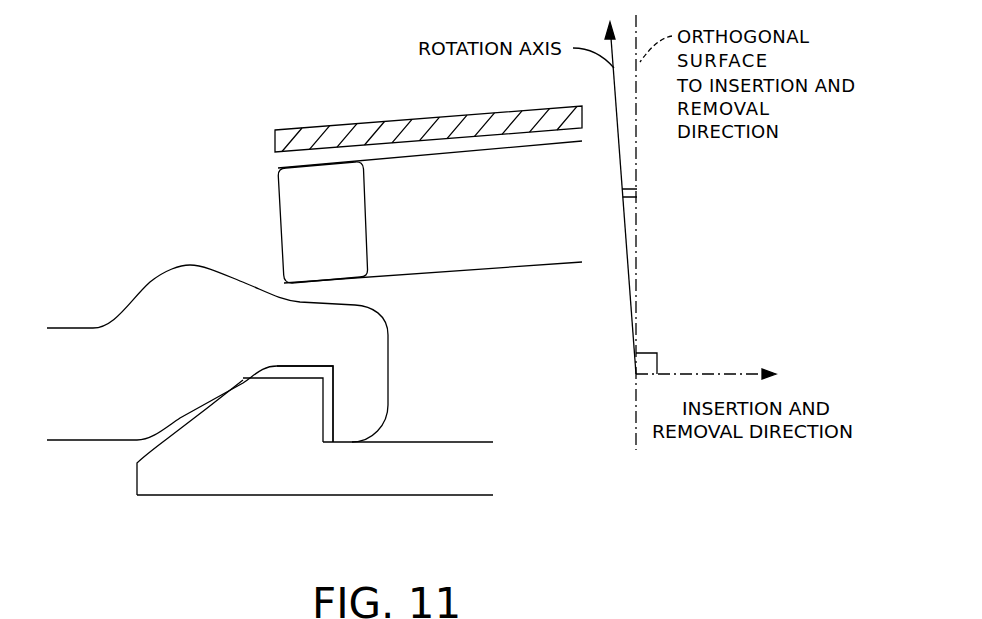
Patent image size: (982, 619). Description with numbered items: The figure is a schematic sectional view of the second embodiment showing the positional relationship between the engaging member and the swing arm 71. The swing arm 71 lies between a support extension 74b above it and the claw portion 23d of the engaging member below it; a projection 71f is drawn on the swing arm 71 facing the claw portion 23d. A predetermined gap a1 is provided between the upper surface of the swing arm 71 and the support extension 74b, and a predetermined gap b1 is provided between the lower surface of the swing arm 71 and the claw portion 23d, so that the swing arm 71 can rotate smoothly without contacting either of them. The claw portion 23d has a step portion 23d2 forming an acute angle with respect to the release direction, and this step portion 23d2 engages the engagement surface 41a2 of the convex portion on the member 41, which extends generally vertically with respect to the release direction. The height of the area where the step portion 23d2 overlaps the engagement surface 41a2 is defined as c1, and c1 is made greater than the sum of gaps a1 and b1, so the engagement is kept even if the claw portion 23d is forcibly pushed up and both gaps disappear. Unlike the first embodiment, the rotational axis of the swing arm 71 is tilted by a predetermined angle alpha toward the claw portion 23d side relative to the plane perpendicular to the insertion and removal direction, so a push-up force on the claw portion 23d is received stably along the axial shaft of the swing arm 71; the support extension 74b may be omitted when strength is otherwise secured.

The support extension 74b is at (335, 123).
The swing arm 71 is at (390, 243).
The projection of rotatable member 71f is at (297, 193).
The claw portion 23d is at (268, 291).
The step portion 23d2 is at (323, 392).
The support member 41 is at (315, 471).
The engagement surface 41a2 is at (330, 428).
The gap a1 is at (410, 103).
The gap b1 is at (299, 268).
The height of overlapping area c1 is at (333, 378).